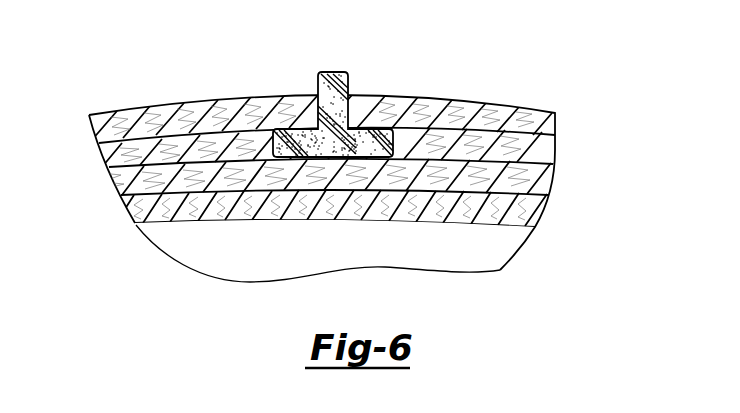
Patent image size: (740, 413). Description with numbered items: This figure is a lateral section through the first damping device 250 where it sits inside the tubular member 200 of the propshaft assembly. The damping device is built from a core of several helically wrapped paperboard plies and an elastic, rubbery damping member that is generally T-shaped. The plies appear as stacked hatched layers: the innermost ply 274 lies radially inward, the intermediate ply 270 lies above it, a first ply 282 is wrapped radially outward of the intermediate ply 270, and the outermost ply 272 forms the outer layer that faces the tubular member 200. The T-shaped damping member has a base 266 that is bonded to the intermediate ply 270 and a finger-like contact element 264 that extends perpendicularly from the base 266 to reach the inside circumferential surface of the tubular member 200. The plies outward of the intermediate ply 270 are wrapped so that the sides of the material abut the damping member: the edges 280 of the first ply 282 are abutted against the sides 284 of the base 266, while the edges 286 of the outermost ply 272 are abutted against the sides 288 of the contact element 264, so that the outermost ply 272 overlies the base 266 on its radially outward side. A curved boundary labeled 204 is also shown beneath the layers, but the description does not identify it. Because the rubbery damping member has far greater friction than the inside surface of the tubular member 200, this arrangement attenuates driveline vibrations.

The tubular member 200 is at (433, 66).
The body structure 204 is at (495, 225).
The first damping device 250 is at (137, 190).
The contact element 264 is at (317, 82).
The base 266 is at (312, 147).
The intermediate ply 270 is at (545, 177).
The outermost ply 272 is at (552, 130).
The innermost ply 274 is at (143, 210).
The edges 280 is at (302, 132).
The first ply 282 is at (547, 162).
The sides 284 is at (302, 132).
The edges 286 is at (284, 97).
The sides 288 is at (313, 112).